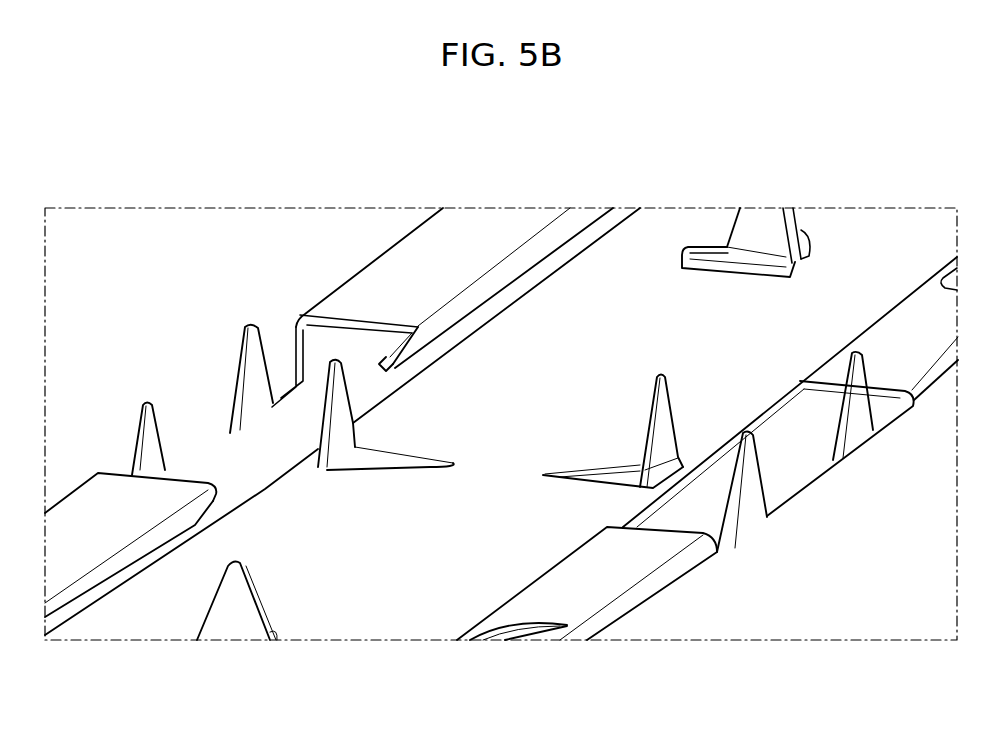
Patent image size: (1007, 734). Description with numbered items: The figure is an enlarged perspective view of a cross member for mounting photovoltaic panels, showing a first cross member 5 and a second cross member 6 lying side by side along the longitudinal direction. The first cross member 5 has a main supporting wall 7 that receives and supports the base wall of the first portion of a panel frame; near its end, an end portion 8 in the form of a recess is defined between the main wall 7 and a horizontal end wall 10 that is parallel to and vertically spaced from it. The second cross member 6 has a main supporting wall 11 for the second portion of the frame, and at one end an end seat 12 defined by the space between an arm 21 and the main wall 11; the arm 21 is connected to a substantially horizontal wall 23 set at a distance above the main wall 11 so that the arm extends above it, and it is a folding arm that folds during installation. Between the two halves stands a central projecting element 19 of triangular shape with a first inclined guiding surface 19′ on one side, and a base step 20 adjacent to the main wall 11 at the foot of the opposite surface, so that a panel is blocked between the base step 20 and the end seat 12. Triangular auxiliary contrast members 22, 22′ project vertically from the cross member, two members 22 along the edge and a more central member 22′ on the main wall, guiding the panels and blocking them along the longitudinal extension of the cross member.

The first cross member 5 is at (894, 257).
The second cross member 6 is at (588, 288).
The main supporting wall 7 is at (850, 244).
The end portion 8 is at (520, 633).
The horizontal end wall 10 is at (575, 568).
The main supporting wall 11 is at (636, 245).
The end seat 12 is at (383, 382).
The central projecting element 19 is at (764, 234).
The first inclined guiding surface 19′ is at (793, 211).
The base step 20 is at (690, 236).
The arm 21 is at (432, 336).
The auxiliary contrast member 22 is at (238, 353).
The auxiliary contrast member 22′ is at (320, 404).
The substantially horizontal wall 23 is at (373, 283).